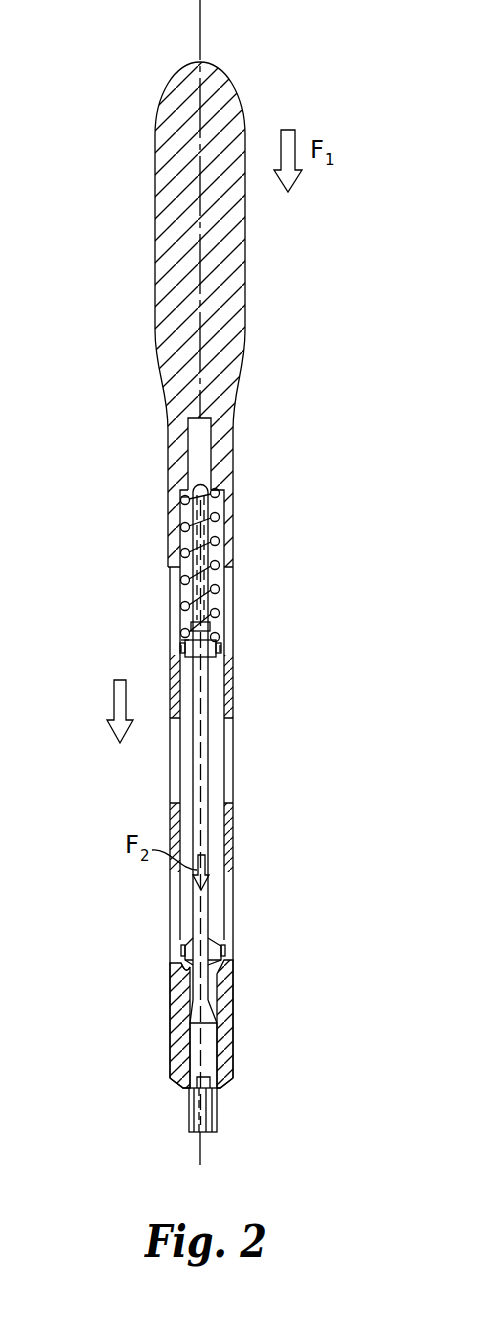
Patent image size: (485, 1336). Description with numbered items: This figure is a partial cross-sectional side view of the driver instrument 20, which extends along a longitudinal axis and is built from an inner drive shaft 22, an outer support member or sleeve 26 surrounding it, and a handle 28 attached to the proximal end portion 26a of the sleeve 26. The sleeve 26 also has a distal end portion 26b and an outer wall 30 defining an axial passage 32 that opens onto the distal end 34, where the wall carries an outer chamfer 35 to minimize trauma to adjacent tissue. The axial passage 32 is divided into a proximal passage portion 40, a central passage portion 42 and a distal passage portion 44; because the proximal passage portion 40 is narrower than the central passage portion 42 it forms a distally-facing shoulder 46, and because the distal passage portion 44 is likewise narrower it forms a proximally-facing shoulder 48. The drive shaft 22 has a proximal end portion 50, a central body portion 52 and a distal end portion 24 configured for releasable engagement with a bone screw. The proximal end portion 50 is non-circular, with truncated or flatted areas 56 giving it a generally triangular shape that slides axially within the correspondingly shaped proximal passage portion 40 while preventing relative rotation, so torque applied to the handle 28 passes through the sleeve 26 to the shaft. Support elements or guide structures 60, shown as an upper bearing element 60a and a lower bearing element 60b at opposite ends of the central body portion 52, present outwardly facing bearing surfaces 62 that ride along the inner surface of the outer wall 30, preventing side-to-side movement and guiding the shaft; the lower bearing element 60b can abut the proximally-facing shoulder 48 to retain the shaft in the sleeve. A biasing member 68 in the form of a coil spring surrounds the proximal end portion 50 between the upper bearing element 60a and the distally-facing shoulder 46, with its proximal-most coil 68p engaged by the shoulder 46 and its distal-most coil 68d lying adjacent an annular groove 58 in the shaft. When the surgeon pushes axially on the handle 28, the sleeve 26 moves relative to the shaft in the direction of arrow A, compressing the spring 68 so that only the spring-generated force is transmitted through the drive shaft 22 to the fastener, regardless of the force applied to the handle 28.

The driver instrument 20 is at (292, 70).
The drive shaft 22 is at (218, 782).
The distal end portion 24 is at (180, 1127).
The support member 26 is at (142, 755).
The proximal end portion 26a is at (158, 462).
The distal end portion 26b is at (160, 1043).
The handle 28 is at (137, 217).
The outer wall 30 is at (232, 709).
The axial passage 32 is at (222, 756).
The distal end 34 is at (230, 1090).
The outer chamfer 35 is at (178, 1087).
The proximal passage portion 40 is at (210, 446).
The central passage portion 42 is at (219, 818).
The distal passage portion 44 is at (222, 1003).
The distally-facing shoulder 46 is at (178, 497).
The proximally-facing shoulder 48 is at (181, 966).
The proximal end portion 50 is at (213, 492).
The central body portion 52 is at (197, 796).
The truncated or flatted areas 56 is at (183, 518).
The annular groove 58 is at (219, 626).
The support elements or guide structures 60 is at (234, 638).
The upper bearing element 60a is at (179, 644).
The lower bearing element 60b is at (178, 952).
The bearing surfaces 62 is at (222, 648).
The biasing member 68 is at (173, 544).
The proximal-most coil 68p is at (218, 508).
The distal-most coil 68d is at (183, 632).